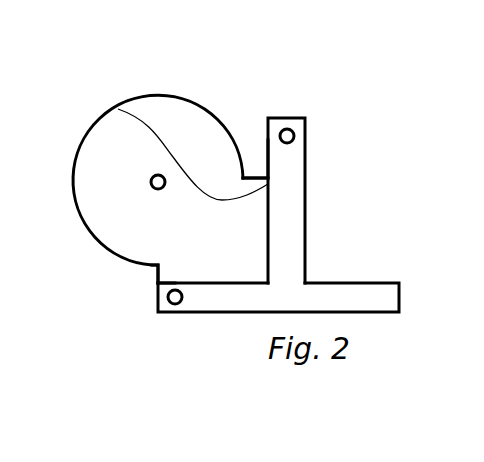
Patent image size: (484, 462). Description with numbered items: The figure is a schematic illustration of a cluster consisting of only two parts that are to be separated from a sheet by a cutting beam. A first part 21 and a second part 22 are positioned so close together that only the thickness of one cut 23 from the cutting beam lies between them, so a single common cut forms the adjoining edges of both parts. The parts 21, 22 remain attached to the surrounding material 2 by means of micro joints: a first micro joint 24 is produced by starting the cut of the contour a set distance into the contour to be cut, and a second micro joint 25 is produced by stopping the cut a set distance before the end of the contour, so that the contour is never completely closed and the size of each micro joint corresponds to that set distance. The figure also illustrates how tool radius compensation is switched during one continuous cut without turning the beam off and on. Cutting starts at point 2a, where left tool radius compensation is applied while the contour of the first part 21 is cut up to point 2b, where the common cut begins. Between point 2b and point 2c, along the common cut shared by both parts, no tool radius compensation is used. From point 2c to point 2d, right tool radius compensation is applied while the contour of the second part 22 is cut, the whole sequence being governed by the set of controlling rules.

The surrounding material 2 is at (230, 223).
The starting point of the cut 2a is at (153, 285).
The point where the common cut starts 2b is at (118, 109).
The point where the common cut ends 2c is at (158, 283).
The end point of the cut 2d is at (270, 173).
The first part 21 is at (115, 218).
The second part 22 is at (276, 316).
The cut 23 is at (270, 220).
The first micro joint 24 is at (150, 280).
The second micro joint 25 is at (255, 170).